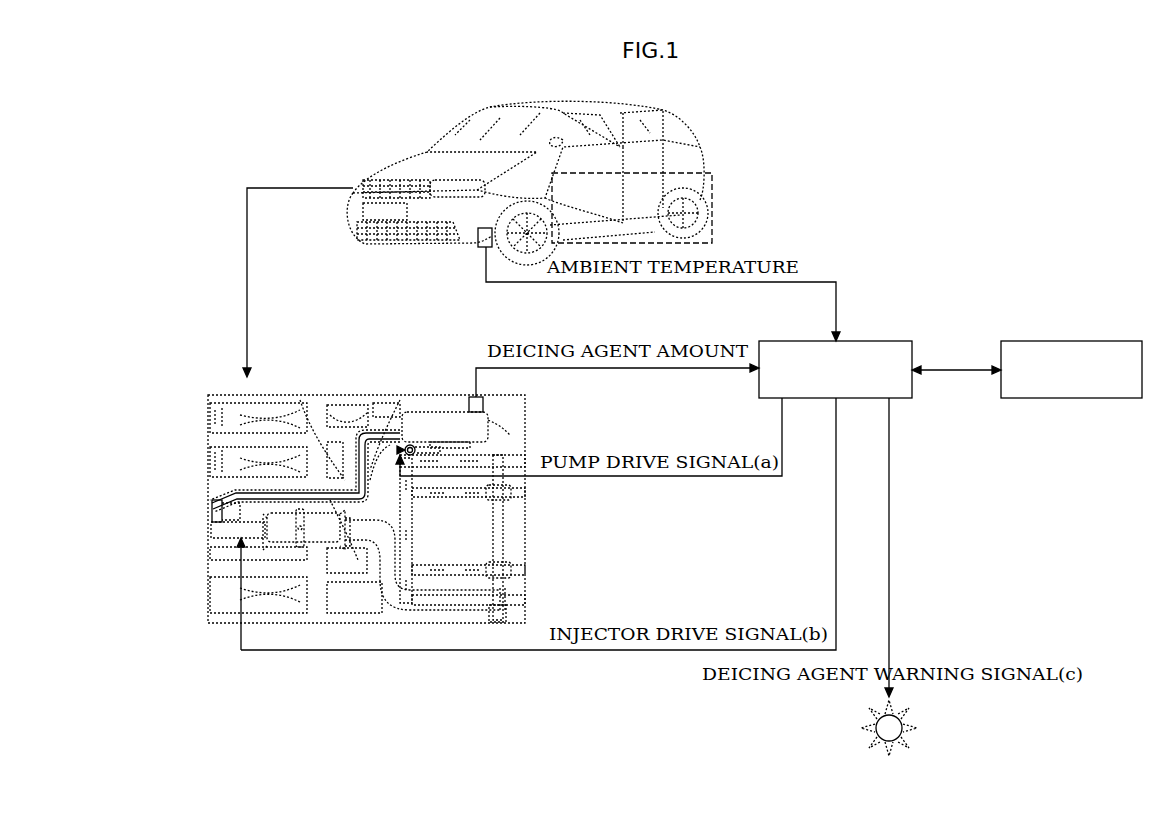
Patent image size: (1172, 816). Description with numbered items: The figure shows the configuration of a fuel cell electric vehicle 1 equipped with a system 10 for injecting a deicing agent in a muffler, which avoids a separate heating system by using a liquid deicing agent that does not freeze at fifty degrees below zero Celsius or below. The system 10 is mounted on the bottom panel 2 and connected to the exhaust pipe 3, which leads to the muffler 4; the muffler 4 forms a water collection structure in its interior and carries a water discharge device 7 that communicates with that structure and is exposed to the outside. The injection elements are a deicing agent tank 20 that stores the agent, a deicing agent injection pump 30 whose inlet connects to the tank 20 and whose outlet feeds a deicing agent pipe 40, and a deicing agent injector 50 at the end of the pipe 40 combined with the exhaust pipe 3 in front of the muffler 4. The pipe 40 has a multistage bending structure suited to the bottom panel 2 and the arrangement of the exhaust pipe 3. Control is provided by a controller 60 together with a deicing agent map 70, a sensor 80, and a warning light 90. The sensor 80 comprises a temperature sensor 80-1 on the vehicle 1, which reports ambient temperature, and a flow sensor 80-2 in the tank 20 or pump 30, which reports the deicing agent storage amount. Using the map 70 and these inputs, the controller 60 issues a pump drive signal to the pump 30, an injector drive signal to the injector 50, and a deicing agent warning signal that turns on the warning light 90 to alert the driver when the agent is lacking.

The fuel cell electric vehicle 1 is at (690, 128).
The system for injecting a deicing agent in a muffler 10 is at (712, 190).
The bottom panel 2 is at (268, 400).
The exhaust pipe 3 is at (215, 532).
The muffler 4 is at (282, 522).
The water discharge device 7 is at (302, 530).
The deicing agent tank 20 is at (497, 421).
The deicing agent injection pump 30 is at (402, 440).
The deicing agent pipe 40 is at (352, 432).
The deicing agent injector 50 is at (212, 503).
The controller 60 is at (882, 340).
The deicing agent map 70 is at (1055, 340).
The sensor 80 is at (400, 332).
The temperature sensor 80-1 is at (478, 242).
The flow sensor 80-2 is at (474, 396).
The warning light 90 is at (860, 728).